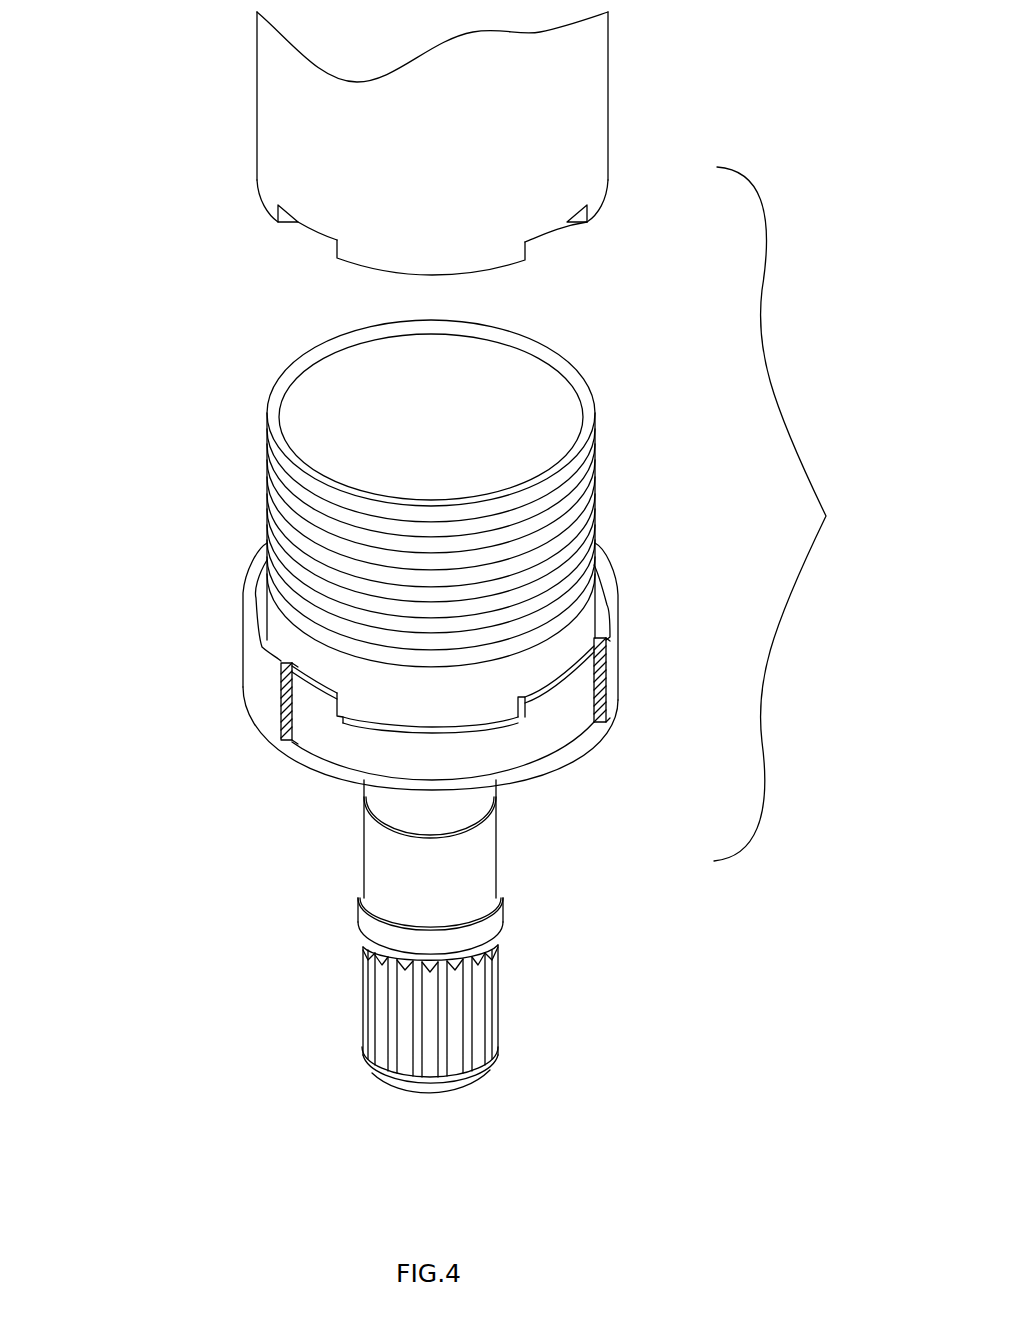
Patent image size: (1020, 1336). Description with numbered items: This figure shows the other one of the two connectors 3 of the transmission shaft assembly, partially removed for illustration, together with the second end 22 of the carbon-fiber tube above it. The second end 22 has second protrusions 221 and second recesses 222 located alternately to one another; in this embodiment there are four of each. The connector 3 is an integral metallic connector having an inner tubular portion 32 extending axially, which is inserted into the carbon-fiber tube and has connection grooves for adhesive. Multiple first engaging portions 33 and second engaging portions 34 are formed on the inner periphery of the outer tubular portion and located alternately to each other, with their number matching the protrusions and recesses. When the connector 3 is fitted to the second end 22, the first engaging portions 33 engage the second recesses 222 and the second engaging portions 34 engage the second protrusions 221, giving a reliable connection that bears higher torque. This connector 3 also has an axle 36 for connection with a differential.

The second end 22 is at (490, 133).
The second protrusions 221 is at (467, 275).
The second recesses 222 is at (308, 227).
The connector 3 is at (250, 658).
The inner tubular portion 32 is at (292, 377).
The first engaging portions 33 is at (547, 688).
The second engaging portions 34 is at (363, 723).
The axle 36 is at (412, 913).